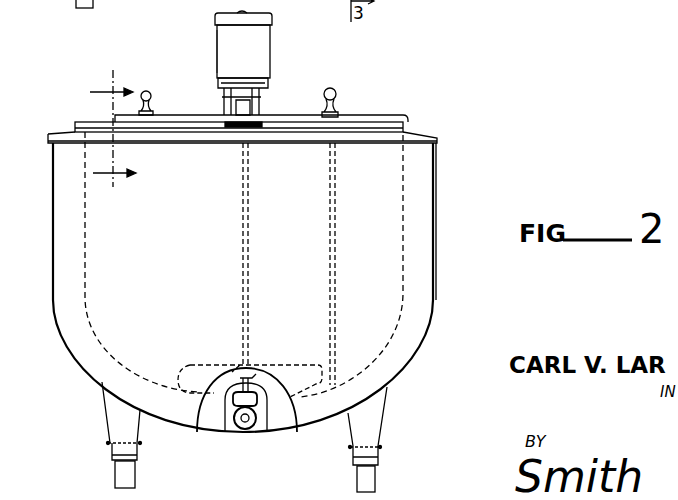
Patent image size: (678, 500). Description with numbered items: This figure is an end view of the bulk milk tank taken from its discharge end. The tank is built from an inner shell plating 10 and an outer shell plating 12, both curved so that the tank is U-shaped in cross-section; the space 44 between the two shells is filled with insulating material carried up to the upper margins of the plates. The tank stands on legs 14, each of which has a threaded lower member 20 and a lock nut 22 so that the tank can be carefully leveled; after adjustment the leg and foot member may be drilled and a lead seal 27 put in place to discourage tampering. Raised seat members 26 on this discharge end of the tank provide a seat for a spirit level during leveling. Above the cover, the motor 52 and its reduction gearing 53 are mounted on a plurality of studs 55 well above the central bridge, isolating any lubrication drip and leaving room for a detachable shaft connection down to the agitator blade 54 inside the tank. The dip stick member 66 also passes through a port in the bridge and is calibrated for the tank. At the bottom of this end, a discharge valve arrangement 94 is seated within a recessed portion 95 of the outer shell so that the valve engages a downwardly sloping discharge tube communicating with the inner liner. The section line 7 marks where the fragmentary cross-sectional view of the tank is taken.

The inner shell plating 10 is at (93, 320).
The outer shell plating 12 is at (80, 358).
The leg 14 is at (120, 428).
The threaded lower member 20 is at (367, 485).
The lock nut 22 is at (370, 458).
The raised seat member 26 is at (168, 133).
The lead seal 27 is at (108, 445).
The space between shells 44 is at (424, 310).
The motor 52 is at (237, 37).
The reduction gearing 53 is at (268, 75).
The agitator blade 54 is at (316, 366).
The studs 55 is at (262, 104).
The dip stick member 66 is at (338, 116).
The section line 7- 7 is at (113, 132).
The discharge valve arrangement 94 is at (260, 423).
The recessed portion of the outer shell 95 is at (222, 412).